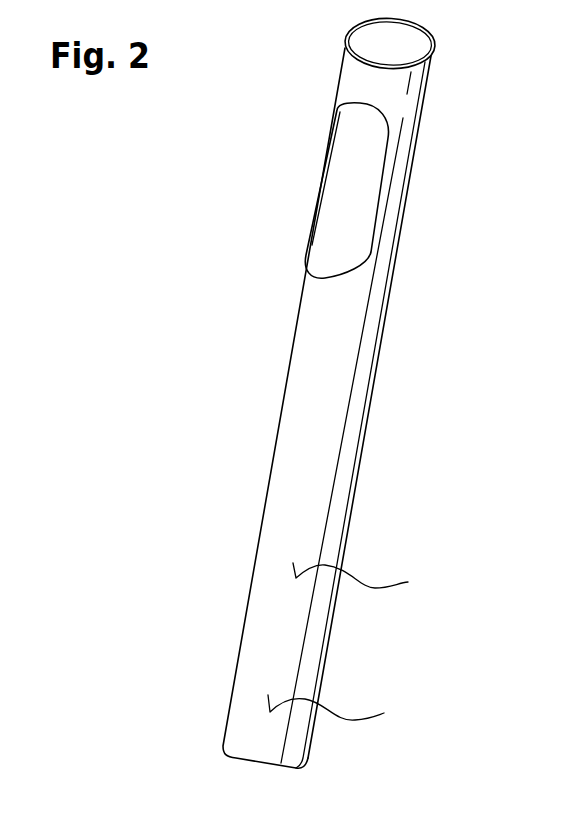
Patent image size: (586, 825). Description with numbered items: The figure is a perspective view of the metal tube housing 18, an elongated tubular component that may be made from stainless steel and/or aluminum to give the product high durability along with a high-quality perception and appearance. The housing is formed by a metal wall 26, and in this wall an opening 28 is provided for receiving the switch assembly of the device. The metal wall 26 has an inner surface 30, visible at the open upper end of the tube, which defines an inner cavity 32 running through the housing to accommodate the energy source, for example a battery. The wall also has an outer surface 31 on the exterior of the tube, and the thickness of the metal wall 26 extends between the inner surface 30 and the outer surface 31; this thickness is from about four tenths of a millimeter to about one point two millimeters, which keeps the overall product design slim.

The metal tube housing 18 is at (318, 442).
The metal wall 26 is at (368, 581).
The opening 28 is at (333, 222).
The inner surface 30 is at (403, 44).
The outer surface 31 is at (343, 709).
The inner cavity 32 is at (368, 46).